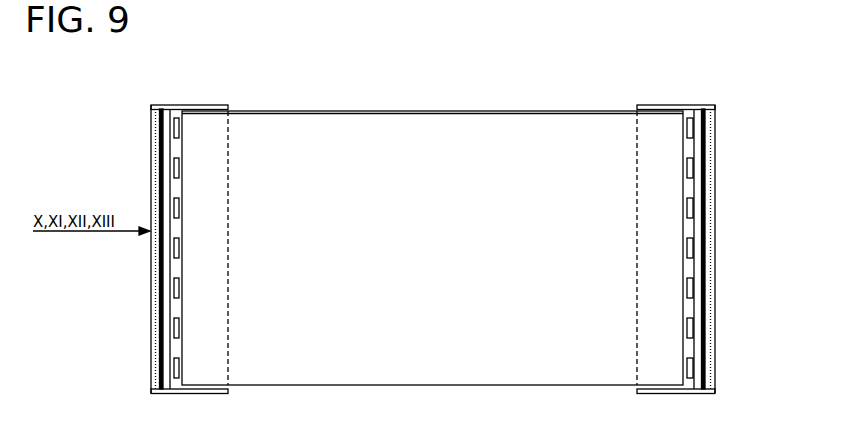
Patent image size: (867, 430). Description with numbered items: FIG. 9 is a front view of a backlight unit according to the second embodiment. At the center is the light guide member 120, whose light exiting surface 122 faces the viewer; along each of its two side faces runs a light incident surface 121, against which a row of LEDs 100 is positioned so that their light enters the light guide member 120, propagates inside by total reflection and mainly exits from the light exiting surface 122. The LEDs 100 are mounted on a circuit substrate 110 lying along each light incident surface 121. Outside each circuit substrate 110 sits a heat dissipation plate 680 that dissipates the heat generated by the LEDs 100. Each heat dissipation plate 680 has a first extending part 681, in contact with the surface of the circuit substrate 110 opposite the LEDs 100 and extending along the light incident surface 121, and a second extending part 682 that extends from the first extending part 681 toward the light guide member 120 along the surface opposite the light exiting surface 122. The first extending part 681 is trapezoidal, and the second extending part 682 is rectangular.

The LED 100 is at (173, 288).
The circuit substrate 110 is at (165, 251).
The light guide member 120 is at (320, 125).
The light incident surface 121 is at (185, 187).
The light exiting surface 122 is at (483, 166).
The heat dissipation plate 680 is at (447, 211).
The first extending part 681 is at (156, 106).
The second extending part 682 is at (156, 51).